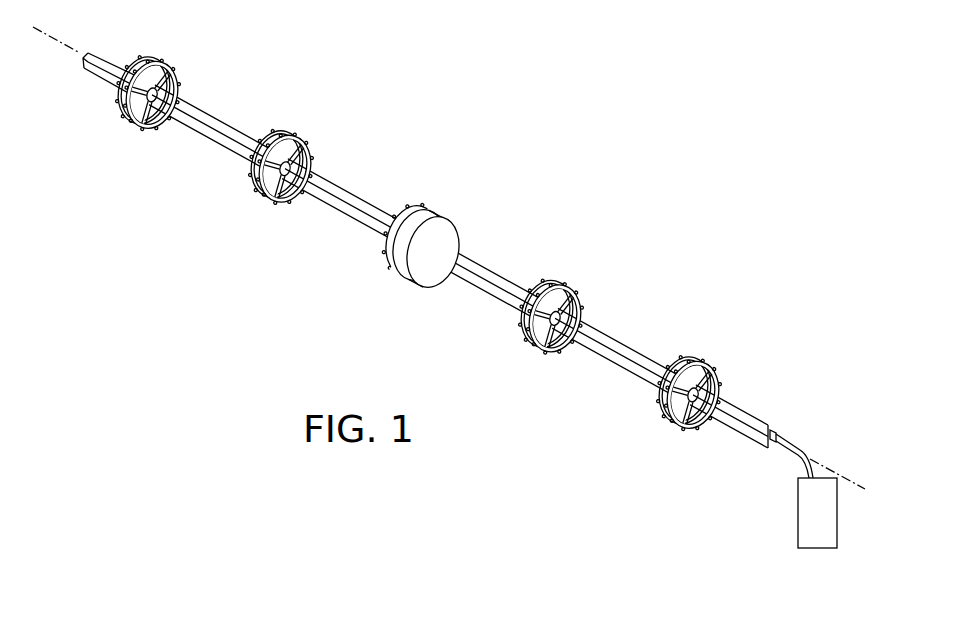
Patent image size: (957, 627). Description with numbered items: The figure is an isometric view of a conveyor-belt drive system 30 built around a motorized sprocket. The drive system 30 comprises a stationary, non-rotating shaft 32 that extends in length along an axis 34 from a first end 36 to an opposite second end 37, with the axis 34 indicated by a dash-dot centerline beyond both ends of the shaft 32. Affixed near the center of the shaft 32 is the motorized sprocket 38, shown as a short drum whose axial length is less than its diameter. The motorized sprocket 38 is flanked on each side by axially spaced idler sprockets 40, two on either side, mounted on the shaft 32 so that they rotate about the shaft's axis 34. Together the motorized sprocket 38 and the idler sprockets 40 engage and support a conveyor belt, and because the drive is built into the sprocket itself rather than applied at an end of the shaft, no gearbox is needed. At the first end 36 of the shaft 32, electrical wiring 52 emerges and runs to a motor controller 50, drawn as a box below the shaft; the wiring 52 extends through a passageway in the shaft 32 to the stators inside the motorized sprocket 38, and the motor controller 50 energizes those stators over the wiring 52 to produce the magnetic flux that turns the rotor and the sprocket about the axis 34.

The drive system 30 is at (547, 159).
The shaft 32 is at (213, 116).
The axis 34 is at (88, 48).
The first end 36 is at (764, 442).
The second end 37 is at (83, 62).
The motorized sprocket 38 is at (452, 232).
The idler sprockets 40 is at (176, 78).
The motor controller 50 is at (810, 538).
The electrical wiring 52 is at (787, 442).